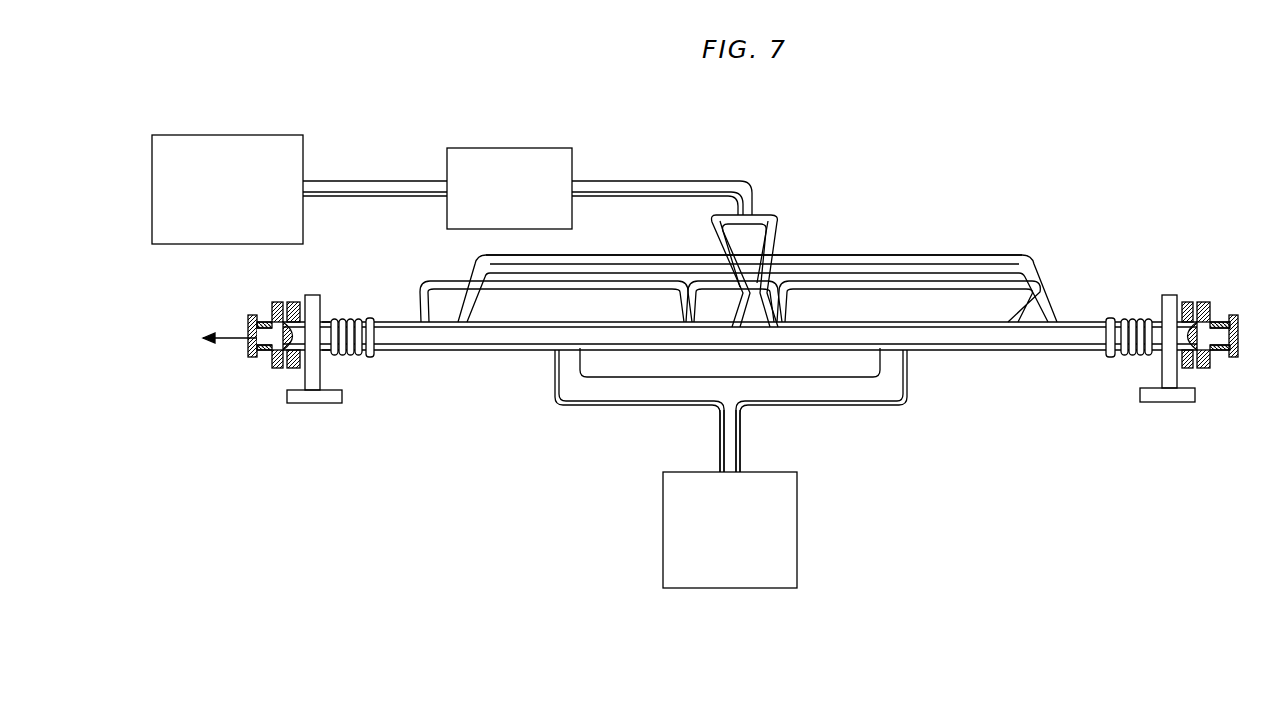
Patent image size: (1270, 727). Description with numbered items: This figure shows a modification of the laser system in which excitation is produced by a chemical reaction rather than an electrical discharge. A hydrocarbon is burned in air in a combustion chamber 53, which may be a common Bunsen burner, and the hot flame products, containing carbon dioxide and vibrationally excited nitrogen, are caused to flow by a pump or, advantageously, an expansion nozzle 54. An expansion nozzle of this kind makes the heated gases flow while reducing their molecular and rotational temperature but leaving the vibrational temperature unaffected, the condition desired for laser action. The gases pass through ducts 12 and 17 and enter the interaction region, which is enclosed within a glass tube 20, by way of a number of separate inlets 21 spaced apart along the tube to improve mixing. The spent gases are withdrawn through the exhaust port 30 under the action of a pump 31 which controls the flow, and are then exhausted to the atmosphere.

The combustion chamber 53 is at (258, 135).
The pump or expansion nozzle 54 is at (513, 148).
The duct 12 is at (778, 222).
The duct 17 is at (710, 222).
The inlets 21 is at (443, 257).
The glass tube 20 is at (980, 348).
The exhaust port 30 is at (742, 441).
The pump 31 is at (800, 514).